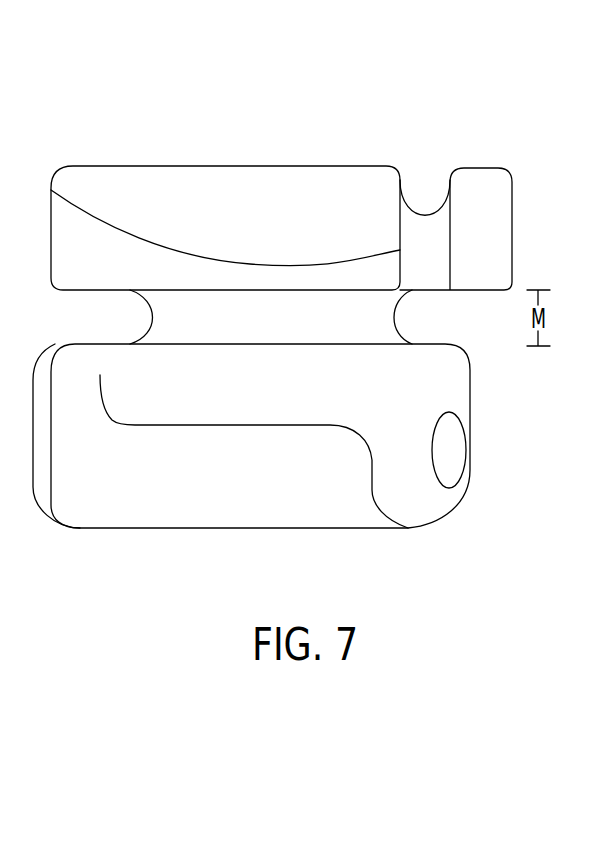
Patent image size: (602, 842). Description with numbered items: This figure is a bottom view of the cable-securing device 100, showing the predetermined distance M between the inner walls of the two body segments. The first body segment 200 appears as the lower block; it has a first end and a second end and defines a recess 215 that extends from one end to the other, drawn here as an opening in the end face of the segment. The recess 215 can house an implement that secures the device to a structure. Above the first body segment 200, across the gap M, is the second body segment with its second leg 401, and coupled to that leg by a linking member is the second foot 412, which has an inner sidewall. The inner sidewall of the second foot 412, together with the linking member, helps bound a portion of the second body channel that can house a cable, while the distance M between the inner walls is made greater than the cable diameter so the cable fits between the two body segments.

The assembly 100 is at (173, 94).
The second leg 401 is at (110, 166).
The second foot 412 is at (511, 176).
The first body segment 200 is at (258, 528).
The recess 215 is at (467, 448).